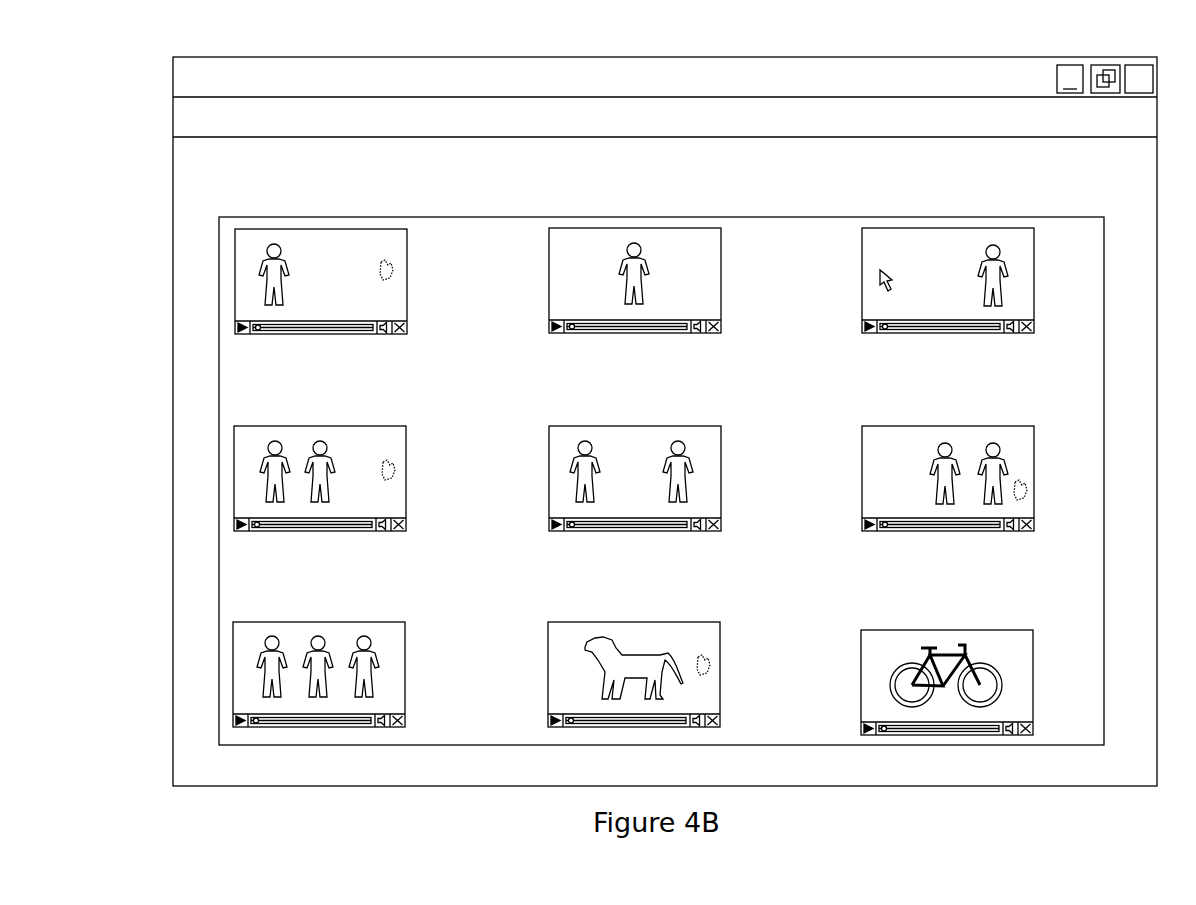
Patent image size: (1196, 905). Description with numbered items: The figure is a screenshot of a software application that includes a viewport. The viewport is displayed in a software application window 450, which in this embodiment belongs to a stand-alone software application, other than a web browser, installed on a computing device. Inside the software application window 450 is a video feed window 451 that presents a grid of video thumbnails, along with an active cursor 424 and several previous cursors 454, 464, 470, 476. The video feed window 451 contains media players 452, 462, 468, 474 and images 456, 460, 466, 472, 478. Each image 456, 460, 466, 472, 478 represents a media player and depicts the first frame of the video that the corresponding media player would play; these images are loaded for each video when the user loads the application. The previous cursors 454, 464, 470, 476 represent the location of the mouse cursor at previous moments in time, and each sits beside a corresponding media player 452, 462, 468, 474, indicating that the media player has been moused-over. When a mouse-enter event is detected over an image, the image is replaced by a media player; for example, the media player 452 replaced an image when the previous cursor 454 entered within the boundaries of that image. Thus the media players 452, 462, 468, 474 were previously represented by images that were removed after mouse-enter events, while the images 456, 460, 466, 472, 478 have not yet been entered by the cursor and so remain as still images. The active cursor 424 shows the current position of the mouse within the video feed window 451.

The software application window 450 is at (1051, 37).
The video feed window 451 is at (527, 216).
The active cursor 424 is at (893, 285).
The media player 452 is at (407, 247).
The previous cursor 454 is at (397, 270).
The image 456 is at (722, 322).
The image 460 is at (1035, 322).
The media player 462 is at (407, 445).
The previous cursor 464 is at (398, 470).
The image 466 is at (722, 520).
The media player 468 is at (1035, 445).
The previous cursor 470 is at (1030, 490).
The image 472 is at (405, 718).
The media player 474 is at (722, 640).
The previous cursor 476 is at (715, 665).
The image 478 is at (1033, 720).